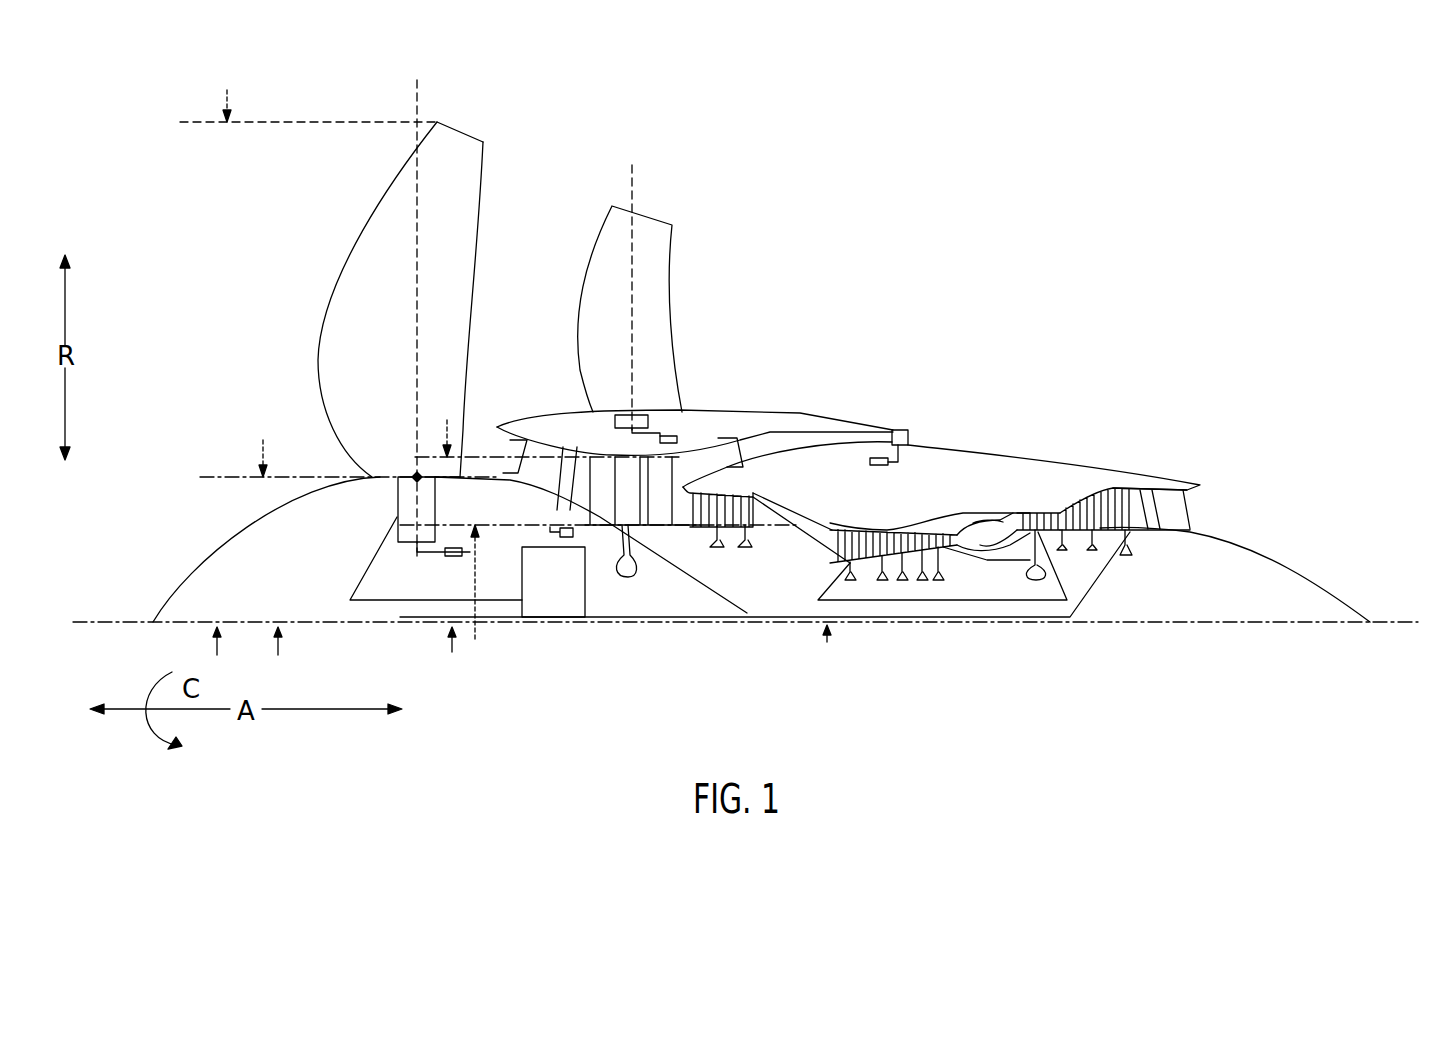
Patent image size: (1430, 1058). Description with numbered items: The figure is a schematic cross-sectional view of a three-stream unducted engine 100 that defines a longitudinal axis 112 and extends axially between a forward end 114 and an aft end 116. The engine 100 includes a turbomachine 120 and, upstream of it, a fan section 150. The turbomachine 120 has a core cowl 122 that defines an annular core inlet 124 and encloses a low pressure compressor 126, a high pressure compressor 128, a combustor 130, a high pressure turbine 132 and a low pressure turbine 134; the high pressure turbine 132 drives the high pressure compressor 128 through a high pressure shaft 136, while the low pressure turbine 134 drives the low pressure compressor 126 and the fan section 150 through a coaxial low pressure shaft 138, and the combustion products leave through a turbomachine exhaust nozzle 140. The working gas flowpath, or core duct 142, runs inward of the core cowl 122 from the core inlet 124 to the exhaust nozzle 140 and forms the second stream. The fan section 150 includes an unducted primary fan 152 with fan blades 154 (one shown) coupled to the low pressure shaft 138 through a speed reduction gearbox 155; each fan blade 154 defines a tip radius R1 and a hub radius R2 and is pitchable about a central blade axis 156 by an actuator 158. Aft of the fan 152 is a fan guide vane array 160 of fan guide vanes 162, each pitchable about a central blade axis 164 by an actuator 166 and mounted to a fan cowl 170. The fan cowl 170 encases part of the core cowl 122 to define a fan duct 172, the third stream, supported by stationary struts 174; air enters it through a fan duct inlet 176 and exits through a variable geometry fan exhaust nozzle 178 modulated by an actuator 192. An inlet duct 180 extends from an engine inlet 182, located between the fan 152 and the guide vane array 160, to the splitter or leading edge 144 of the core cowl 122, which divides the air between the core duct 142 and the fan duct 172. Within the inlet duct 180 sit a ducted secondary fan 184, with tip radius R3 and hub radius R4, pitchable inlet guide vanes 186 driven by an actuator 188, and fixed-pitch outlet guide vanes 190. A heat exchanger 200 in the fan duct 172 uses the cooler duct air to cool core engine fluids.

The engine 100 is at (983, 246).
The longitudinal axis 112 is at (1400, 625).
The forward end 114 is at (152, 620).
The aft end 116 is at (1362, 600).
The turbomachine 120 is at (933, 512).
The core cowl 122 is at (917, 442).
The core inlet 124 is at (680, 514).
The low pressure compressor 126 is at (727, 550).
The high pressure compressor 128 is at (915, 570).
The combustor 130 is at (975, 551).
The high pressure turbine 132 is at (1038, 510).
The low pressure turbine 134 is at (1107, 484).
The high pressure shaft 136 is at (1045, 600).
The low pressure shaft 138 is at (362, 580).
The turbomachine exhaust nozzle 140 is at (1172, 506).
The core duct 142 is at (993, 523).
The leading edge 144 is at (687, 522).
The fan section 150 is at (300, 272).
The fan 152 is at (356, 272).
The fan blade 154 is at (368, 228).
The speed reduction gearbox 155 is at (555, 600).
The central blade axis 156 is at (437, 120).
The actuator 158 is at (458, 546).
The fan guide vane array 160 is at (848, 278).
The fan guide vane 162 is at (652, 300).
The central blade axis 164 is at (637, 178).
The actuator 166 is at (683, 455).
The fan cowl 170 is at (728, 432).
The fan duct 172 is at (762, 438).
The stationary strut 174 is at (790, 480).
The fan duct inlet 176 is at (688, 477).
The fan exhaust nozzle 178 is at (903, 430).
The inlet duct 180 is at (605, 514).
The engine inlet 182 is at (481, 430).
The ducted fan 184 is at (627, 478).
The inlet guide vane 186 is at (573, 470).
The actuator 188 is at (557, 520).
The outlet guide vane 190 is at (660, 456).
The actuator 192 is at (872, 465).
The heat exchanger 200 is at (757, 550).
The fan blade tip radius R1 is at (227, 95).
The hub radius R2 is at (263, 440).
The fan blade tip radius R3 is at (447, 425).
The hub radius R4 is at (478, 640).